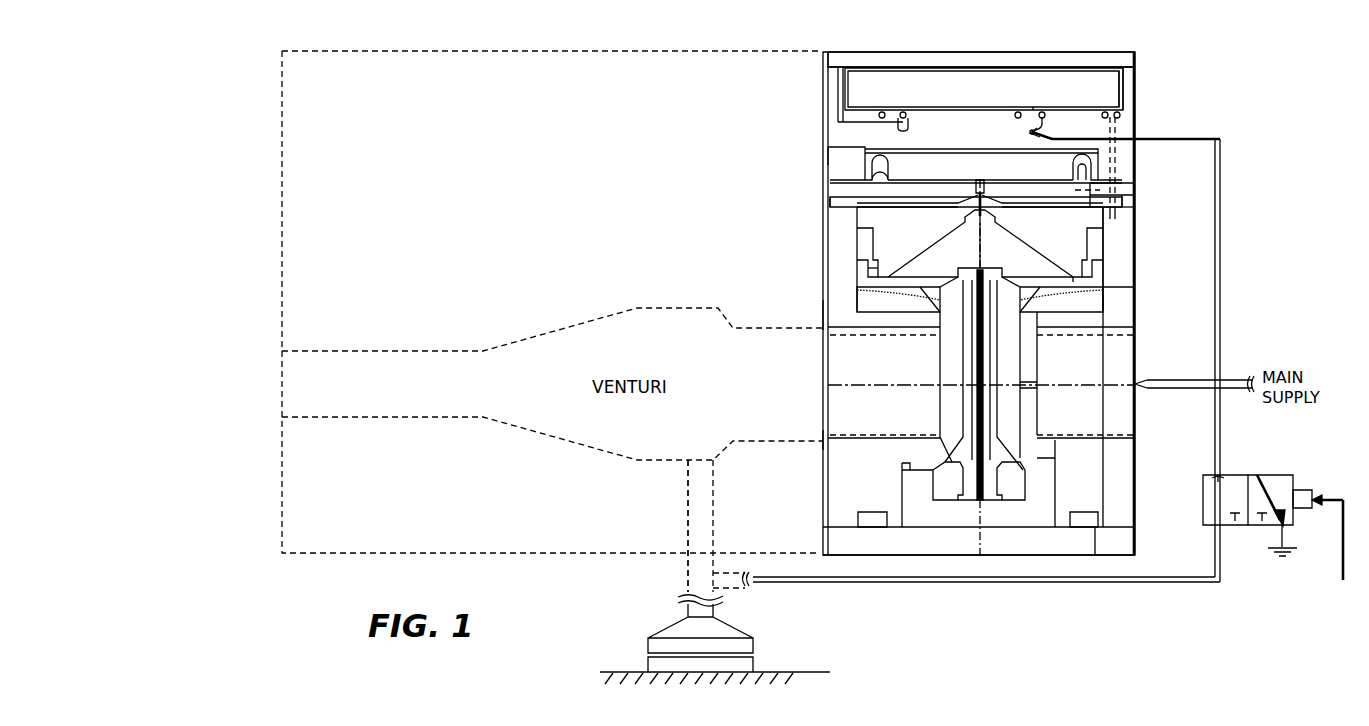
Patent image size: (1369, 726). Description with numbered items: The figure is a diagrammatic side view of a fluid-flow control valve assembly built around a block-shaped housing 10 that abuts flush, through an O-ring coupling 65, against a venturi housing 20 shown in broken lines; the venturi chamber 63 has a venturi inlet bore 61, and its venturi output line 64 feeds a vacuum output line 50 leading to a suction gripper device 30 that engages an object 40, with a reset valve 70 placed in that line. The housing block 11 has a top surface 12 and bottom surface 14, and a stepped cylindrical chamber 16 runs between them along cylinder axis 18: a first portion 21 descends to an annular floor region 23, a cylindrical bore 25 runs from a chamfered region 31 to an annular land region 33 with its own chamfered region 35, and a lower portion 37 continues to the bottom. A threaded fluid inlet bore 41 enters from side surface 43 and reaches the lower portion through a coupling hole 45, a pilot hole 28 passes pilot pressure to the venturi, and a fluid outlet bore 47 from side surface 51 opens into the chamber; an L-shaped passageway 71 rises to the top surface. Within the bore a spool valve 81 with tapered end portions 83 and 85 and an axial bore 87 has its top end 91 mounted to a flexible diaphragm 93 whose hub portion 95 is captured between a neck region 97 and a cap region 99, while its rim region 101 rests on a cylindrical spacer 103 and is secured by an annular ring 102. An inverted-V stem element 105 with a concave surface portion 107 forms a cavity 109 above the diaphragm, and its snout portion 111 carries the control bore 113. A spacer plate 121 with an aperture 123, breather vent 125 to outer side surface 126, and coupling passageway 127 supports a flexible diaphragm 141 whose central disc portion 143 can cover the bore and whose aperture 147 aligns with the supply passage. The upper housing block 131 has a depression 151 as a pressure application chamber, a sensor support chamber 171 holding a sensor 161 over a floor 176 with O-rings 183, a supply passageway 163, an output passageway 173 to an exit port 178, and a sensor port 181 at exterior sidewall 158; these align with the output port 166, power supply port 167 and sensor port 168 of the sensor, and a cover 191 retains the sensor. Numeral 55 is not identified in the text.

The housing 10 is at (1142, 57).
The first solid rectangular housing block 11 is at (1125, 293).
The top surface 12 is at (840, 196).
The bottom surface 14 is at (1122, 528).
The stepped cylindrical chamber 16 is at (1112, 250).
The longitudinal cylinder axis 18 is at (982, 540).
The venturi housing 20 is at (465, 50).
The first portion of chamber 21 is at (862, 213).
The annular floor region 23 is at (870, 312).
The cylindrical bore 25 is at (940, 410).
The pilot hole 28 is at (1030, 382).
The suction gripper device 30 is at (668, 630).
The chamfered region 31 is at (940, 325).
The annular land region 33 is at (900, 468).
The chamfered region 35 is at (949, 481).
The lower portion of chamber 37 is at (1048, 485).
The object 40 is at (755, 665).
The fluid inlet bore 41 is at (1110, 423).
The side surface 43 is at (1137, 485).
The coupling hole 45 is at (1048, 455).
The fluid outlet bore 47 is at (860, 423).
The vacuum output line 50 is at (1044, 584).
The side surface 51 is at (823, 297).
The outlet 55 is at (1093, 545).
The venturi inlet bore 61 is at (780, 400).
The venturi chamber 63 is at (695, 435).
The venturi output line 64 is at (688, 573).
The O-ring coupling 65 is at (823, 444).
The reset valve 70 is at (1257, 475).
The slanted L-shaped fluid passageway 71 is at (1140, 215).
The spool valve 81 is at (928, 482).
The tapered end portion 83 is at (1005, 330).
The tapered end portion 85 is at (1012, 488).
The axial bore 87 is at (975, 505).
The top end 91 is at (1005, 270).
The flexible diaphragm 93 is at (1073, 278).
The interior hub portion 95 is at (947, 287).
The neck region 97 is at (998, 290).
The cap region 99 is at (998, 268).
The rim region 101 is at (1100, 270).
The annular ring 102 is at (868, 268).
The cylindrical spacer 103 is at (1108, 297).
The stem element 105 is at (910, 255).
The concave V surface portion 107 is at (948, 240).
The interior cavity 109 is at (1018, 245).
The snout portion 111 is at (968, 210).
The hollow cylindrical bore 113 is at (990, 210).
The spacer plate 121 is at (1123, 183).
The cylindrical aperture 123 is at (902, 208).
The breather vent 125 is at (1125, 207).
The outer side surface 126 is at (1134, 192).
The coupling fluid communication passageway 127 is at (1074, 195).
The upper housing block 131 is at (1139, 93).
The flexible diaphragm 141 is at (1038, 178).
The central disc portion 143 is at (990, 189).
The aperture 147 is at (1113, 170).
The shallow cylindrical depression 151 is at (947, 171).
The exterior sidewall 158 is at (1134, 100).
The sensor 161 is at (1013, 80).
The fluid communication passageway 163 is at (1120, 127).
The output port 166 is at (893, 110).
The power supply port 167 is at (1102, 108).
The sensor port 168 is at (1033, 107).
The sensor support chamber 171 is at (840, 92).
The L-shaped output fluid passageway 173 is at (892, 128).
The floor 176 is at (838, 125).
The exit port 178 is at (840, 160).
The sensor port 181 is at (1066, 118).
The O-rings 183 is at (908, 123).
The cover 191 is at (877, 57).